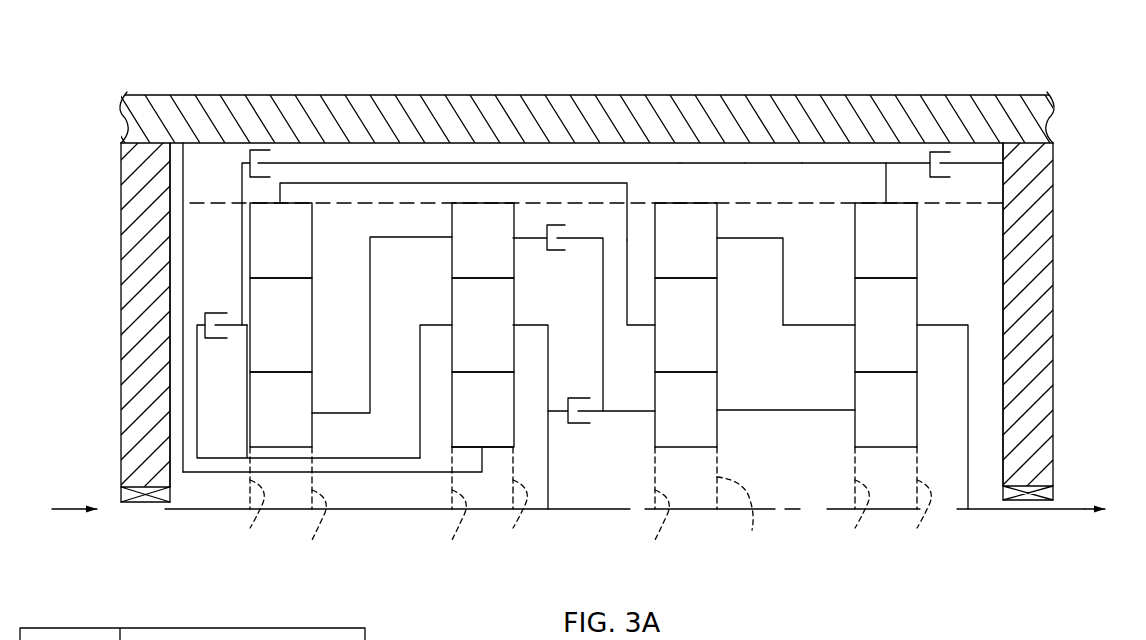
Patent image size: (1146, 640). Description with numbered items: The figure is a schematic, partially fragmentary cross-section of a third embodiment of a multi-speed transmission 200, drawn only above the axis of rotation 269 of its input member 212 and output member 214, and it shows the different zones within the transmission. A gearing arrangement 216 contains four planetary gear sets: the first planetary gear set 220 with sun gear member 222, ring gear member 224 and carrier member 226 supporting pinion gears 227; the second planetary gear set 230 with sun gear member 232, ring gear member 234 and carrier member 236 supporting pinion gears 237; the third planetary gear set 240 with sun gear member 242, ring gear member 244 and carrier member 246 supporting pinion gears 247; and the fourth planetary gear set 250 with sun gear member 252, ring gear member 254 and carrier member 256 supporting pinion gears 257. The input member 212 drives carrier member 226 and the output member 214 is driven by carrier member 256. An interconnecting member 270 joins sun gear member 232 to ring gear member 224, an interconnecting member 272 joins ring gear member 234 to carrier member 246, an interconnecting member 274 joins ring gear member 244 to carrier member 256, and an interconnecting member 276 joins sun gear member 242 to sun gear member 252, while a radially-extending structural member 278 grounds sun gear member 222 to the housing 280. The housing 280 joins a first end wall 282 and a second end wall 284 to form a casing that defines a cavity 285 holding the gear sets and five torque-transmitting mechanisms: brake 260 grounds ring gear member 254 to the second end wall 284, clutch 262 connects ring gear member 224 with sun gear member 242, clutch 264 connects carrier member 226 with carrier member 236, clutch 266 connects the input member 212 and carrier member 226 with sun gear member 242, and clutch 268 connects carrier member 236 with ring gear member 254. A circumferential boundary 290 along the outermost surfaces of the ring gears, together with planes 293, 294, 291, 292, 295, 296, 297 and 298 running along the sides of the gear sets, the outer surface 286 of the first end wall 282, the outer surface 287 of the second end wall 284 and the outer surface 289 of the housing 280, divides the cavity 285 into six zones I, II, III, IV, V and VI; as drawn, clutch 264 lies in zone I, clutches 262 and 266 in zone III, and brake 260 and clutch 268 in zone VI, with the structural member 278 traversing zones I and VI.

The transmission 200 is at (930, 48).
The input member 212 is at (72, 505).
The output member 214 is at (1075, 505).
The gearing arrangement 216 is at (745, 145).
The first planetary gear set 220 is at (348, 395).
The sun gear member 222 is at (504, 423).
The ring gear member 224 is at (504, 255).
The carrier member 226 is at (420, 325).
The pinion gears 227 is at (504, 335).
The second planetary gear set 230 is at (311, 378).
The sun gear member 232 is at (302, 423).
The ring gear member 234 is at (302, 255).
The carrier member 236 is at (245, 328).
The pinion gears 237 is at (302, 335).
The third planetary gear set 240 is at (687, 393).
The sun gear member 242 is at (707, 423).
The ring gear member 244 is at (707, 255).
The carrier member 246 is at (628, 330).
The pinion gears 247 is at (707, 335).
The fourth planetary gear set 250 is at (887, 383).
The sun gear member 252 is at (907, 423).
The ring gear member 254 is at (907, 255).
The carrier member 256 is at (818, 328).
The pinion gears 257 is at (907, 335).
The torque-transmitting mechanism 260 is at (958, 157).
The torque-transmitting mechanism 262 is at (575, 250).
The torque-transmitting mechanism 264 is at (230, 303).
The torque-transmitting mechanism 266 is at (600, 415).
The torque-transmitting mechanism 268 is at (280, 152).
The axis of rotation 269 is at (841, 512).
The interconnecting member 270 is at (383, 237).
The interconnecting member 272 is at (600, 182).
The interconnecting member 274 is at (783, 265).
The interconnecting member 276 is at (782, 410).
The structural member 278 is at (185, 177).
The housing 280 is at (478, 115).
The first end wall 282 is at (147, 272).
The second end wall 284 is at (1045, 275).
The cavity 285 is at (682, 150).
The outer surface 286 is at (110, 345).
The outer surface 287 is at (1064, 378).
The outer surface 289 is at (645, 83).
The circumferential boundary 290 is at (790, 204).
The plane 291 is at (463, 502).
The plane 292 is at (536, 503).
The plane 293 is at (244, 504).
The plane 294 is at (305, 509).
The plane 295 is at (653, 504).
The plane 296 is at (744, 502).
The plane 297 is at (862, 505).
The plane 298 is at (939, 505).
The first zone I is at (279, 385).
The second zone II is at (348, 395).
The third zone III is at (588, 478).
The fourth zone IV is at (736, 393).
The fifth zone V is at (929, 383).
The sixth zone VI is at (805, 148).